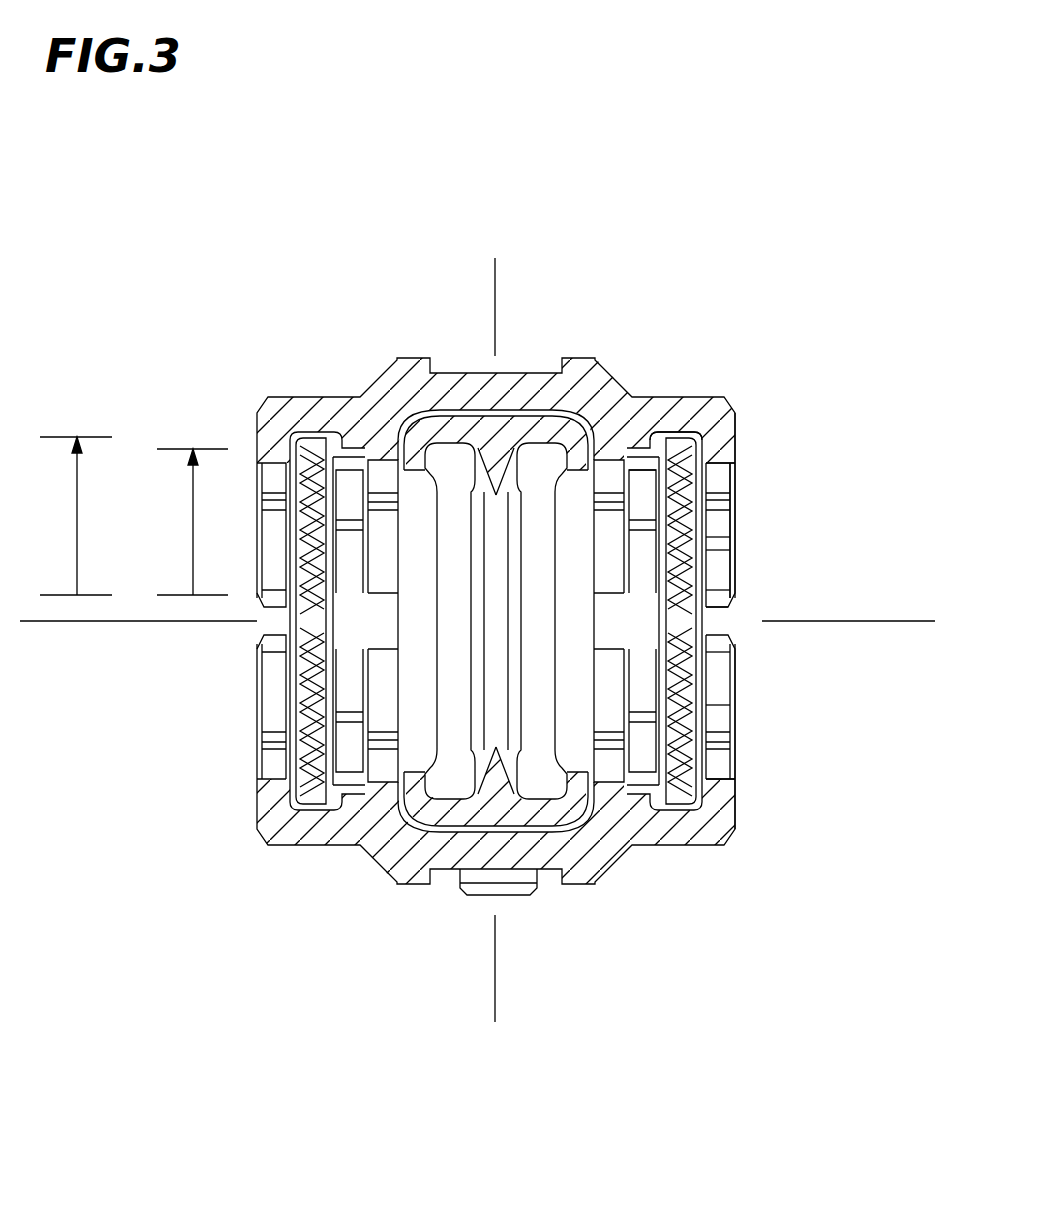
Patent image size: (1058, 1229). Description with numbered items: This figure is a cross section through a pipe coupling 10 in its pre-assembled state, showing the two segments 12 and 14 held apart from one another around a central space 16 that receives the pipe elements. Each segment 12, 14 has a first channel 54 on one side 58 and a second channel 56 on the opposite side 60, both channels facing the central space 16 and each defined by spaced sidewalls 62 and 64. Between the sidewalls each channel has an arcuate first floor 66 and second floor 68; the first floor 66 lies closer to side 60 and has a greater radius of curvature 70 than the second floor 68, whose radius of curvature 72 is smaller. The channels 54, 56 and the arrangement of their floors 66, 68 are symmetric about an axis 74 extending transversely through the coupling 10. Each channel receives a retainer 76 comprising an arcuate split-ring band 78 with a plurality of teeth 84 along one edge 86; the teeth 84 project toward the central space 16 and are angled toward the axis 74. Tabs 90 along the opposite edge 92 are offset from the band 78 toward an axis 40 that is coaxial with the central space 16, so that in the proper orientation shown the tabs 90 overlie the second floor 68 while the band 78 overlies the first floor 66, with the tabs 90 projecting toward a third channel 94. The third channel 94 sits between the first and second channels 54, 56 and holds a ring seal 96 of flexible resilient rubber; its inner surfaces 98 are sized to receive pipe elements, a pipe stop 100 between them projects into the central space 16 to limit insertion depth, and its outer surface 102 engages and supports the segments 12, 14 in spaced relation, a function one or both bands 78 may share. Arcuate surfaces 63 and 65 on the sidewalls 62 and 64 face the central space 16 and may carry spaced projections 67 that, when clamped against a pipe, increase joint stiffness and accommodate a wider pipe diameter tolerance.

The coupling 10 is at (808, 316).
The segment 12 is at (397, 863).
The segment 14 is at (613, 395).
The central space 16 is at (490, 582).
The axis 40 is at (110, 620).
The first channel 54 is at (290, 830).
The second channel 56 is at (698, 850).
The side 58 is at (253, 782).
The side 60 is at (735, 760).
The sidewall 62 is at (712, 490).
The first arcuate surface 63 is at (705, 536).
The sidewall 64 is at (738, 448).
The second arcuate surface 65 is at (718, 569).
The first floor 66 is at (678, 435).
The projections 67 is at (733, 493).
The second floor 68 is at (630, 445).
The radius of curvature 70 is at (75, 540).
The radius of curvature 72 is at (188, 498).
The axis 74 is at (495, 957).
The retainer 76 is at (720, 547).
The arcuate band 78 is at (715, 612).
The teeth 84 is at (700, 700).
The edge 86 is at (717, 650).
The tabs 90 is at (603, 760).
The edge 92 is at (663, 622).
The third channel 94 is at (537, 413).
The ring seal 96 is at (432, 425).
The inner surfaces 98 is at (380, 763).
The pipe stop 100 is at (480, 790).
The outer surface 102 is at (539, 828).